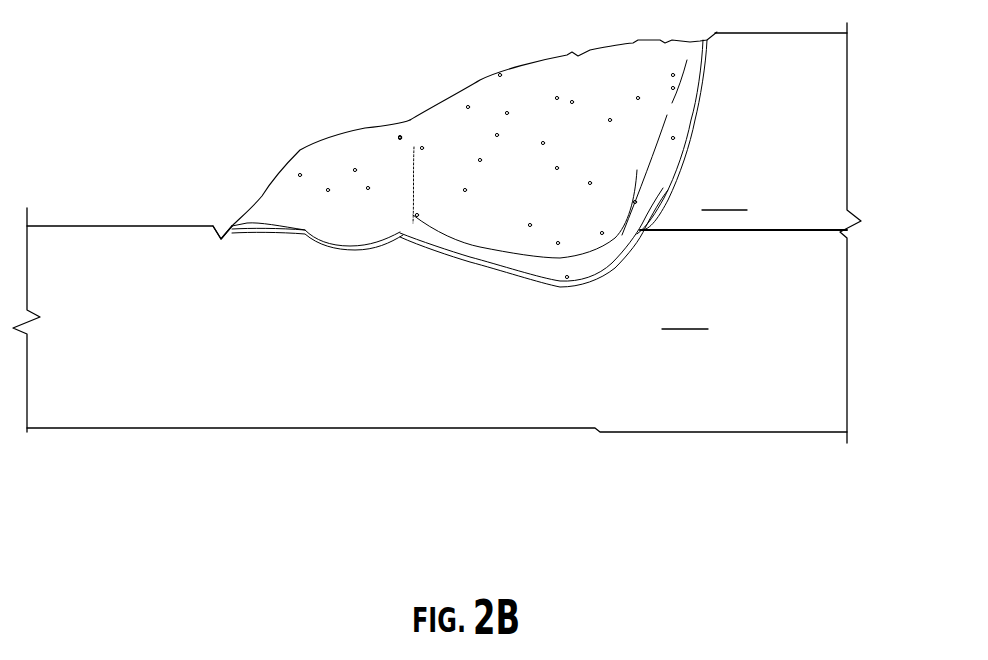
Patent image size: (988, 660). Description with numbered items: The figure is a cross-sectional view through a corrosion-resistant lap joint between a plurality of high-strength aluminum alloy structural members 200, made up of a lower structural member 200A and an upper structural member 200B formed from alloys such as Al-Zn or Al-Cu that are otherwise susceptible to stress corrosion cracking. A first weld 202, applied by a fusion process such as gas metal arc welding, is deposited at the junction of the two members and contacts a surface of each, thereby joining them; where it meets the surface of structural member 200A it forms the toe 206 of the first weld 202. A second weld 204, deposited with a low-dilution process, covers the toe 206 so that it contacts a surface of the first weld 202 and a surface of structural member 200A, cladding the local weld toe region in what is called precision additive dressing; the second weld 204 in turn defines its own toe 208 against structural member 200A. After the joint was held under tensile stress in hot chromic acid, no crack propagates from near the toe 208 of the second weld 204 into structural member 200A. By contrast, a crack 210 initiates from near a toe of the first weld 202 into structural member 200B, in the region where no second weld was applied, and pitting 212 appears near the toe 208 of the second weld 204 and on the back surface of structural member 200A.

The plurality of high-strength aluminum alloy structural members 200 is at (470, 233).
The high-strength aluminum alloy structural member 200A is at (685, 319).
The high-strength aluminum alloy structural member 200B is at (724, 200).
The first weld 202 is at (493, 108).
The second weld 204 is at (288, 190).
The toe of the first weld 206 is at (402, 236).
The toe of the second weld 208 is at (247, 224).
The crack 210 is at (718, 44).
The pitting 212 is at (598, 425).